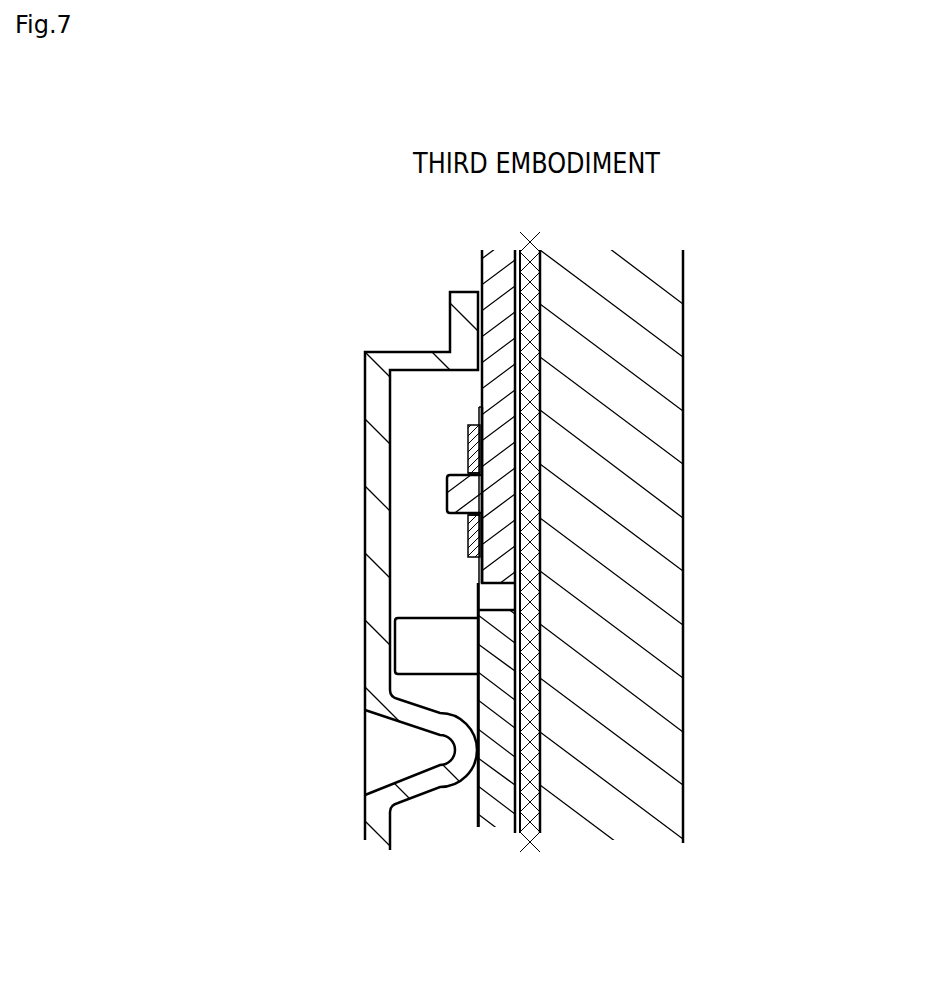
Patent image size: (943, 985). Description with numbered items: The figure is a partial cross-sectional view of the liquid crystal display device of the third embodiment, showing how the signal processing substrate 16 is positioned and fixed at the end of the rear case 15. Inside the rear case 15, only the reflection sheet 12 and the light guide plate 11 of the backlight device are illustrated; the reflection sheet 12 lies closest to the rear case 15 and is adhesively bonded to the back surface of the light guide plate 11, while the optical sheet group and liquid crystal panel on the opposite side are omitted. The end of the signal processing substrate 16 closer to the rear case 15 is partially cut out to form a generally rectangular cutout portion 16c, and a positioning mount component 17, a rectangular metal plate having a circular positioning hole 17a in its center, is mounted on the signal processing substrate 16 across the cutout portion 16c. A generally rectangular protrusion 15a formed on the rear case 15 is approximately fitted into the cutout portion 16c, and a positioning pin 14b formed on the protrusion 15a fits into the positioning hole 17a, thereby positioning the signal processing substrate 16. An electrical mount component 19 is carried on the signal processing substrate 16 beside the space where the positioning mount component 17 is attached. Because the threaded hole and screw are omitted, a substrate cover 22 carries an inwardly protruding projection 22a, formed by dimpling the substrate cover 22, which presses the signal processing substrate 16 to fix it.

The light guide plate 11 is at (657, 467).
The reflection sheet 12 is at (554, 699).
The positioning pin 14b is at (447, 495).
The rear case 15 is at (485, 268).
The protrusion 15a is at (512, 406).
The signal processing substrate 16 is at (483, 823).
The cutout portion 16c is at (512, 604).
The positioning mount component 17 is at (453, 561).
The positioning hole 17a is at (447, 525).
The electrical mount component 19 is at (399, 650).
The substrate cover 22 is at (358, 378).
The projection 22a is at (437, 746).